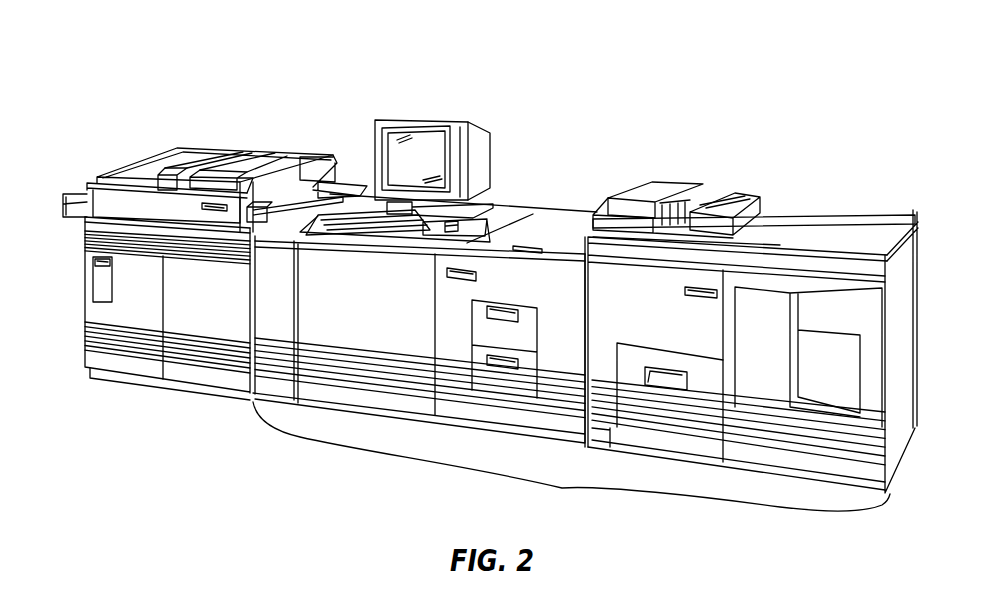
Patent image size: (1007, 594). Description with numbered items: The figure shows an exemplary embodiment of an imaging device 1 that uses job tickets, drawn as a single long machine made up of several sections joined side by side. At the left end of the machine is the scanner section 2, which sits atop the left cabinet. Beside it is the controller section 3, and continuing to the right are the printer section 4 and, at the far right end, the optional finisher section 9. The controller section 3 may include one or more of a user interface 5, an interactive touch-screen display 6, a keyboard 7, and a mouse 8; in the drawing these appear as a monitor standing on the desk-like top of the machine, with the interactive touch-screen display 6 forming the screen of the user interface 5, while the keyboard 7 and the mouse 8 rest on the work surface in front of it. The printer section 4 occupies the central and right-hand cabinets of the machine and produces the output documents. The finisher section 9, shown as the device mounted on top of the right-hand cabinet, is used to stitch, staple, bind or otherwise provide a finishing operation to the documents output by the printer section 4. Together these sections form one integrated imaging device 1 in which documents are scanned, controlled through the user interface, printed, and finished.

The imaging device 1 is at (548, 63).
The scanner section 2 is at (239, 143).
The controller section 3 is at (79, 309).
The printer section 4 is at (569, 508).
The user interface 5 is at (437, 118).
The interactive touch-screen display 6 is at (395, 167).
The keyboard 7 is at (367, 237).
The mouse 8 is at (433, 238).
The finisher section 9 is at (742, 168).